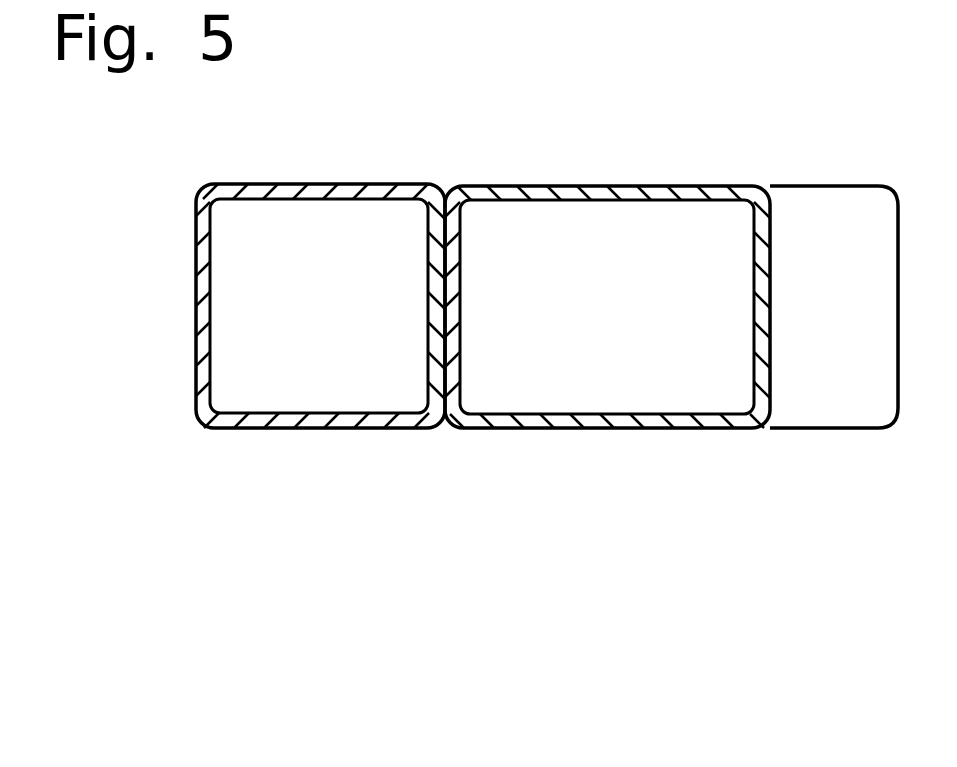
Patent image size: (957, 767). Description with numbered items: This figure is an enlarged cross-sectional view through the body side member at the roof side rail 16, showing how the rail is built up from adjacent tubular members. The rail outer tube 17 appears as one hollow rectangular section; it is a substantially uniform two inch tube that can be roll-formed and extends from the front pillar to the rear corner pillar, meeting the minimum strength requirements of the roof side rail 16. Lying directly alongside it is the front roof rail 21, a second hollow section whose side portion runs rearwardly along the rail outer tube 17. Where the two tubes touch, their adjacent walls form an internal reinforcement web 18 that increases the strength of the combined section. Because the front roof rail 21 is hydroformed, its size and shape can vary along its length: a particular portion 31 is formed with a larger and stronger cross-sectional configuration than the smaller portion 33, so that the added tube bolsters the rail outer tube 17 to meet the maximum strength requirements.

The roof side rail 16 is at (167, 295).
The rail outer tube 17 is at (338, 184).
The front roof rail 21 is at (695, 186).
The internal reinforcement web 18 is at (462, 308).
The smaller portion 33 is at (289, 427).
The larger portion of additional tubular member 31 is at (693, 429).